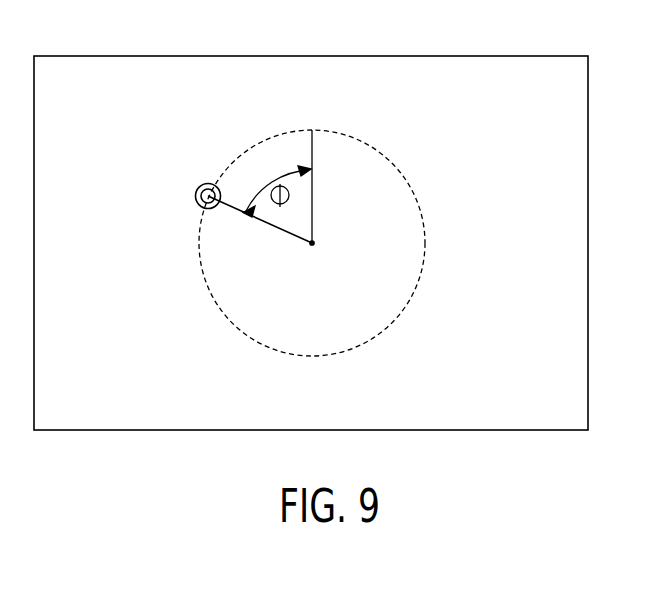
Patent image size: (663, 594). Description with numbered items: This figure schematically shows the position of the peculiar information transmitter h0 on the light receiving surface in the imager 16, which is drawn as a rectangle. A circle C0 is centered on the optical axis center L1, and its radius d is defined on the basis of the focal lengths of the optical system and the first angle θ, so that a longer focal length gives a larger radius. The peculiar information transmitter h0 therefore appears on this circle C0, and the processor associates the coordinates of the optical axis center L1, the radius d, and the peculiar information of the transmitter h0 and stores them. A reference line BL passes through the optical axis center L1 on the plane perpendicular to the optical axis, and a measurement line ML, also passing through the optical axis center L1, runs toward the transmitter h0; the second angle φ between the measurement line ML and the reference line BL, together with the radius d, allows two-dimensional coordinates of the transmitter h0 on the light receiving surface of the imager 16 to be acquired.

The imager 16 is at (125, 55).
The circle C0 is at (391, 324).
The reference line BL is at (312, 214).
The optical axis center L1 is at (312, 243).
The measurement line ML is at (258, 219).
The peculiar information transmitter h0 is at (196, 196).